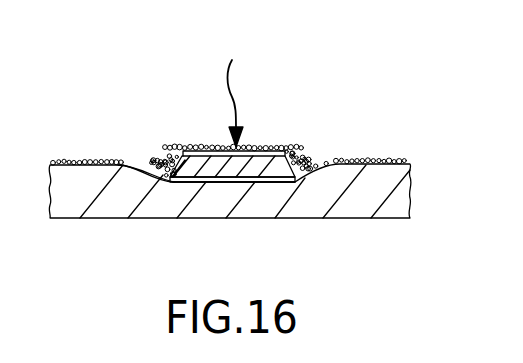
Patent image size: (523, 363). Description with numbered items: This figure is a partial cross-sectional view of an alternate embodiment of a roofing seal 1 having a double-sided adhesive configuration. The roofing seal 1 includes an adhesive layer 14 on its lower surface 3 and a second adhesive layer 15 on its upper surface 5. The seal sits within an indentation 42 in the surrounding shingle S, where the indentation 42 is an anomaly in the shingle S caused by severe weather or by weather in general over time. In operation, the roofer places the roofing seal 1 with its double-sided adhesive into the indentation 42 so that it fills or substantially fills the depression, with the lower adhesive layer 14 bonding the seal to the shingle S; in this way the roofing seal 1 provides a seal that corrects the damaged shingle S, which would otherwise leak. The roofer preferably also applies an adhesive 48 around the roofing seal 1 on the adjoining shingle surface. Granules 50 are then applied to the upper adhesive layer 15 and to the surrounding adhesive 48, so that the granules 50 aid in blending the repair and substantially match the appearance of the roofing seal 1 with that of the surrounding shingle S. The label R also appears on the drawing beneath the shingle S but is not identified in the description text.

The roofing seal 1 is at (234, 92).
The lower surface 3 is at (210, 182).
The upper surface 5 is at (189, 150).
The adhesive layer 14 is at (268, 182).
The adhesive layer 15 is at (283, 154).
The indentation 42 is at (130, 160).
The adhesive 48 is at (313, 155).
The granules 50 is at (163, 150).
The shingle S is at (403, 192).
The hatched substrate region R is at (348, 219).